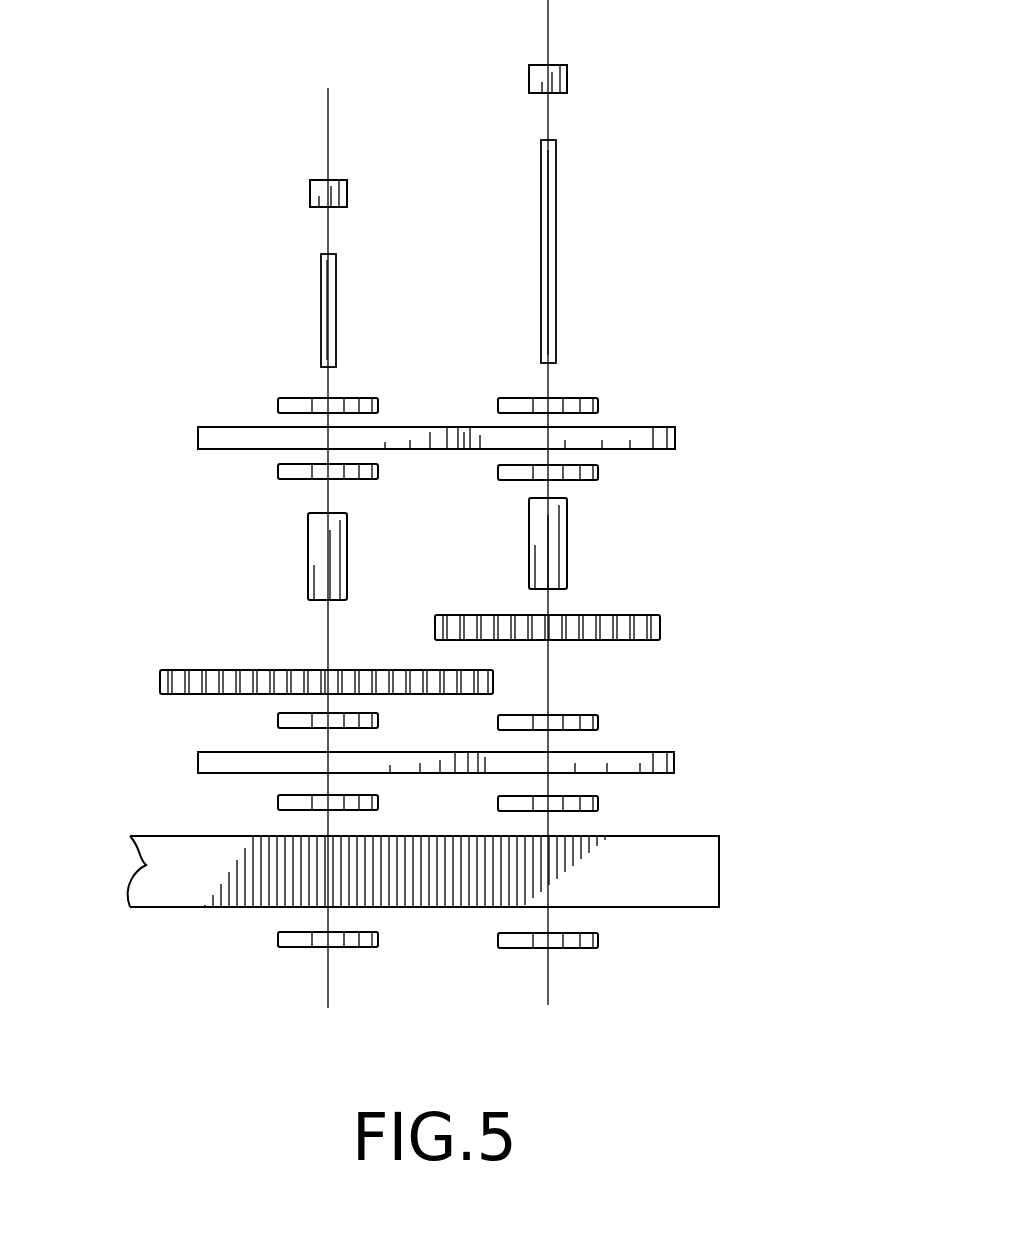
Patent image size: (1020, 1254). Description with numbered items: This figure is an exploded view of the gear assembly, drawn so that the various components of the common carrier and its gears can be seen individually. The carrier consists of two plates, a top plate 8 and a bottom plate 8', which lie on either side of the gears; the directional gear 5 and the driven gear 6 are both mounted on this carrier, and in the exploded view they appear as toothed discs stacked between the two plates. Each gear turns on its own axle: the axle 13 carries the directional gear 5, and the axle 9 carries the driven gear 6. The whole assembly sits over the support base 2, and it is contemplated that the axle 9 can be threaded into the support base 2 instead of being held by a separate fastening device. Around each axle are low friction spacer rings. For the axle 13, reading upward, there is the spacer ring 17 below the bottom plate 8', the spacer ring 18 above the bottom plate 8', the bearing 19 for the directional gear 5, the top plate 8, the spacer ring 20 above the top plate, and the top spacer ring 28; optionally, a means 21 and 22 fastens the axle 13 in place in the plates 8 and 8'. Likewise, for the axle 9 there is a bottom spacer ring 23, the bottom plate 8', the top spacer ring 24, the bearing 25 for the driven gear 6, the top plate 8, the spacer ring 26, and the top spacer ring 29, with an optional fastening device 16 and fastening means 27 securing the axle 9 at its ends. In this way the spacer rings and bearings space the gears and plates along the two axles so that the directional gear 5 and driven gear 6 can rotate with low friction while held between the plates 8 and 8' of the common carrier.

The support base 2 is at (150, 870).
The directional gear 5 is at (172, 670).
The driven gear 6 is at (660, 627).
The top plate 8 is at (501, 417).
The bottom plate 8' is at (512, 758).
The axle 9 is at (556, 232).
The axle 13 is at (321, 285).
The fastening device 16 is at (567, 78).
The spacer ring 17 is at (278, 803).
The spacer ring 18 is at (278, 720).
The bearing 19 is at (308, 550).
The spacer ring 20 is at (278, 471).
The fastening means 21 is at (310, 192).
The fastening means 22 is at (278, 939).
The bottom spacer ring 23 is at (598, 803).
The top spacer ring 24 is at (598, 722).
The bearing 25 is at (567, 543).
The spacer ring 26 is at (598, 472).
The fastening means 27 is at (598, 940).
The top spacer ring 28 is at (278, 405).
The top spacer ring 29 is at (598, 405).